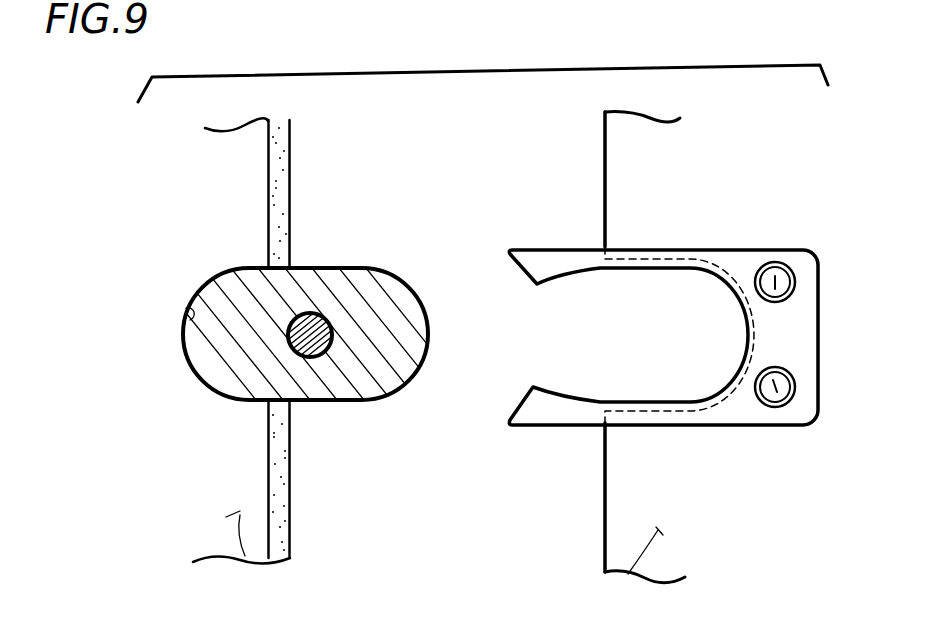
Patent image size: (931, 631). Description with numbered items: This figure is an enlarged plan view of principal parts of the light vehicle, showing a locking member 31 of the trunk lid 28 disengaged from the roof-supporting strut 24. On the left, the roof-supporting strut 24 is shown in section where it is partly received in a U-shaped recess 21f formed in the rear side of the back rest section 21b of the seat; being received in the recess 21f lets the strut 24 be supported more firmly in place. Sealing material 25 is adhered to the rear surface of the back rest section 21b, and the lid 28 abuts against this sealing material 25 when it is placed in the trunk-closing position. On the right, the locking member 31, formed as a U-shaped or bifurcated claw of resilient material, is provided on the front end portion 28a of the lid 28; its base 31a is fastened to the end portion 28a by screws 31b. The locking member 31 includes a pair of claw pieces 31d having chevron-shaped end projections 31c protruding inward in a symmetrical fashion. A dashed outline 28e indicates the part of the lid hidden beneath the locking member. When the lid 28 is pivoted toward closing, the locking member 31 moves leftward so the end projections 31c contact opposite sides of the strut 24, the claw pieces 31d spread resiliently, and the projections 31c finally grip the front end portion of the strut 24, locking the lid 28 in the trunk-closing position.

The back rest section 21b is at (242, 553).
The U-shaped recess 21f is at (183, 312).
The roof-supporting strut 24 is at (235, 387).
The sealing material 25 is at (283, 190).
The lid 28 is at (608, 576).
The front end portion of the lid 28a is at (603, 140).
The plate inserted portion 28e is at (716, 247).
The locking member 31 is at (662, 354).
The base of the locking member 31a is at (783, 333).
The screw 31b is at (785, 265).
The chevron-shaped end projection 31c is at (537, 288).
The claw piece 31d is at (553, 258).